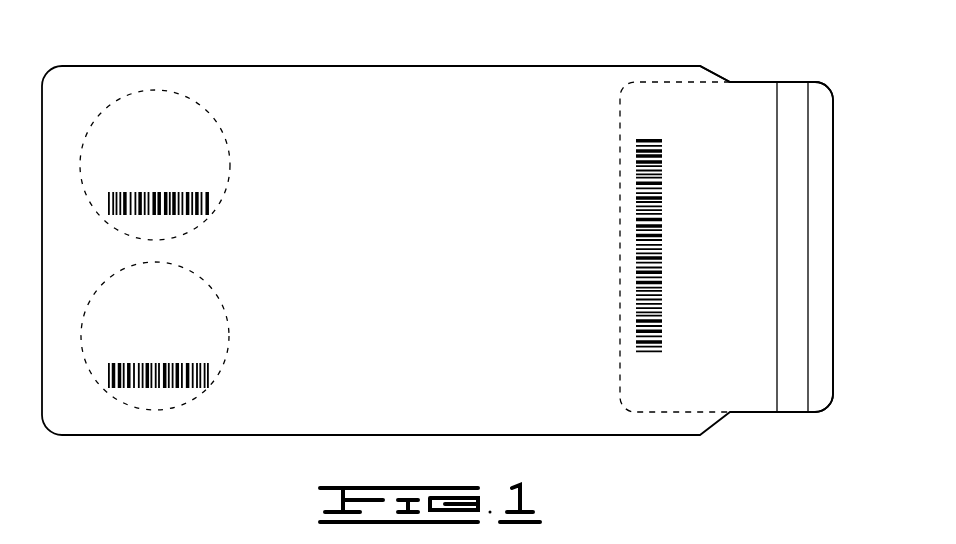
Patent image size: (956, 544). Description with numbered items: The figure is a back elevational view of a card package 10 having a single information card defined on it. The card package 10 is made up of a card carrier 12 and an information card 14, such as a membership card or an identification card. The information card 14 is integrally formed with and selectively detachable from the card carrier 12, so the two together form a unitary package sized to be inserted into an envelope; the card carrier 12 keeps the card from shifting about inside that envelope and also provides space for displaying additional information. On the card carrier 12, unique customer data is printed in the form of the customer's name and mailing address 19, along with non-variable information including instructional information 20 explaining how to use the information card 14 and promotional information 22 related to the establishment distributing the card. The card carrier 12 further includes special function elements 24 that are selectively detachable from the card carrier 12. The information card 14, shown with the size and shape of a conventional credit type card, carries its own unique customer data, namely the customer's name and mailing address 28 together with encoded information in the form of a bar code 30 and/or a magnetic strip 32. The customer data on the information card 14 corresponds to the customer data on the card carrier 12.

The card package 10 is at (486, 64).
The card carrier 12 is at (590, 63).
The information card 14 is at (744, 100).
The customer's name and mailing address 19 is at (527, 383).
The instructional information 20 is at (326, 238).
The promotional information 22 is at (322, 118).
The special function elements 24 is at (147, 117).
The customer's name and mailing address 28 is at (737, 381).
The bar code 30 is at (655, 357).
The magnetic strip 32 is at (793, 383).